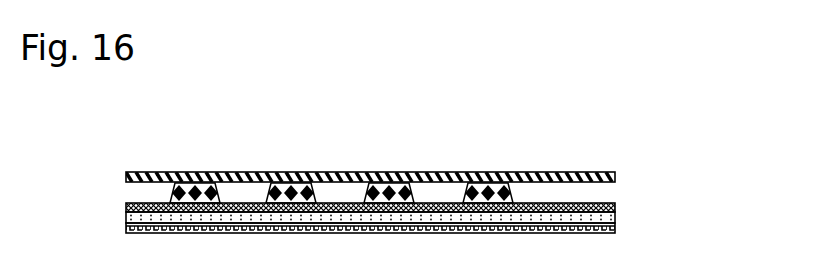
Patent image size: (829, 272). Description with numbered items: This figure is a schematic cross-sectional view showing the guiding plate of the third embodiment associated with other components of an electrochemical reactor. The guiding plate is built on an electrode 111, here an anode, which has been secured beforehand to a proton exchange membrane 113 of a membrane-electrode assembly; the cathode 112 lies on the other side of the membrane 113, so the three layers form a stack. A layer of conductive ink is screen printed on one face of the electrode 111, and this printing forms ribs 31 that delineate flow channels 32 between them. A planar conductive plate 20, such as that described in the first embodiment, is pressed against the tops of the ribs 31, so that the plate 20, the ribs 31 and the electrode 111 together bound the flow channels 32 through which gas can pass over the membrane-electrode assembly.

The planar conductive plate 20 is at (615, 178).
The ribs 31 is at (317, 193).
The flow channels 32 is at (238, 193).
The electrode 111 is at (126, 206).
The cathode 112 is at (126, 228).
The proton exchange membrane 113 is at (615, 218).